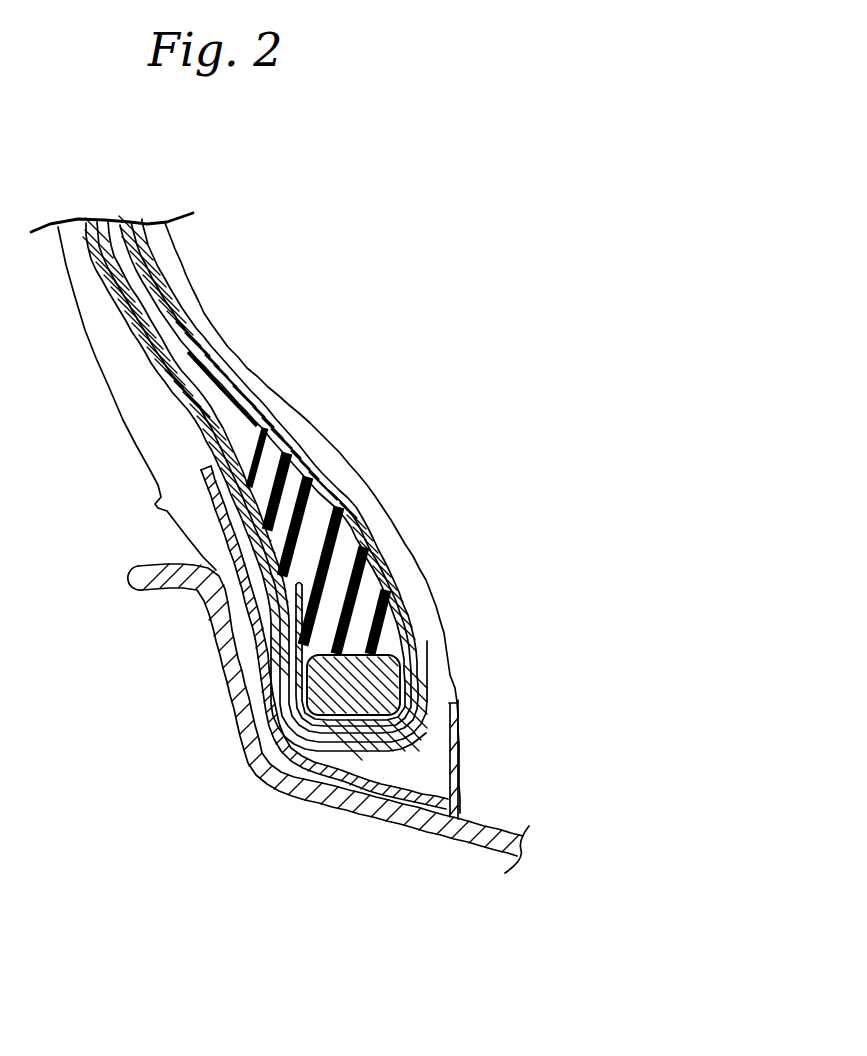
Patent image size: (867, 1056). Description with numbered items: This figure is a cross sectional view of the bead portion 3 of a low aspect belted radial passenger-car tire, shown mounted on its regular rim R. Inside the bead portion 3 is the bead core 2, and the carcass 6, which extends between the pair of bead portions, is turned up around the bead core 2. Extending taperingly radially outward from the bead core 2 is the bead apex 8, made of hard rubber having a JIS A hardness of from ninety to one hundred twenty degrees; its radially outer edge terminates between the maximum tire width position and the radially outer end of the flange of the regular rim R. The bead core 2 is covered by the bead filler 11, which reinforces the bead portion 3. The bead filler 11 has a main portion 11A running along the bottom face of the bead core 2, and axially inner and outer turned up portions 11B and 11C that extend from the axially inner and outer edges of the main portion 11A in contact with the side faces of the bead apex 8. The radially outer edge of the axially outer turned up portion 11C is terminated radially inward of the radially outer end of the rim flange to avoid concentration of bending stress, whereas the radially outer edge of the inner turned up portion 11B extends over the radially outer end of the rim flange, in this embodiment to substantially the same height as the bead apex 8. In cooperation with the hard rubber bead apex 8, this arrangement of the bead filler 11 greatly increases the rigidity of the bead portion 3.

The bead core 2 is at (360, 687).
The bead portion 3 is at (413, 483).
The carcass 6 is at (170, 286).
The bead apex 8 is at (288, 493).
The bead filler 11 is at (383, 597).
The main portion of bead filler 11A is at (347, 733).
The axially inner turned up portion 11B is at (353, 528).
The axially outer turned up portion 11C is at (300, 654).
The regular rim R is at (268, 762).